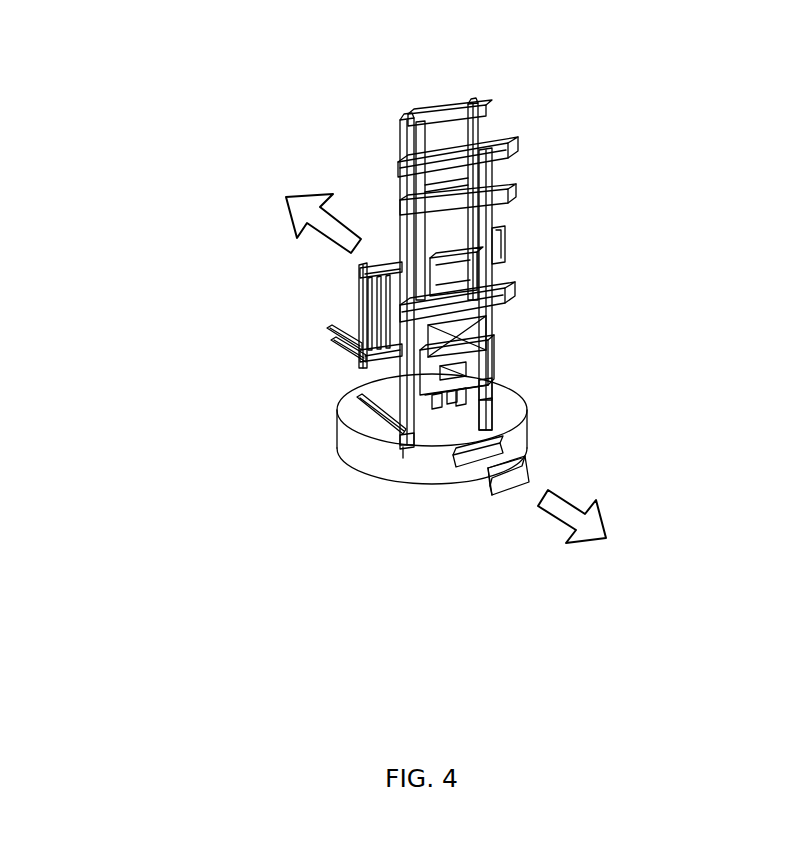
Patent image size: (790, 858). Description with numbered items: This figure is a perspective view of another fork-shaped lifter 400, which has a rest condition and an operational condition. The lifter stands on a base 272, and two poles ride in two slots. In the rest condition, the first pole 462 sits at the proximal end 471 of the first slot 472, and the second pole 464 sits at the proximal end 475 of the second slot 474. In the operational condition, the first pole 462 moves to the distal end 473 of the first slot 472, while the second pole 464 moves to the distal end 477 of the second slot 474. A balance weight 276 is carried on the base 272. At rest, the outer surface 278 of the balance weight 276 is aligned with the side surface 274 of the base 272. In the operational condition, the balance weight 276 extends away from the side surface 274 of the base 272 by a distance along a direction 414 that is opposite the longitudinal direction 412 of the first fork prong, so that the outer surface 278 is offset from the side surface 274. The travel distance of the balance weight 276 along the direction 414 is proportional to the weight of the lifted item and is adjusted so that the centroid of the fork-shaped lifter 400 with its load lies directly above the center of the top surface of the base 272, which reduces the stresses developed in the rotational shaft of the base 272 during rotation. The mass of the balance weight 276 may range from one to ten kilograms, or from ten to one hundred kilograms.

The fork-shaped lifter 400 is at (162, 105).
The longitudinal direction of the first fork prong 412 is at (305, 210).
The direction opposite the longitudinal direction 414 is at (594, 527).
The base 272 is at (516, 437).
The side surface of the base 274 is at (450, 478).
The balance weight 276 is at (540, 473).
The outer surface of the balance weight 278 is at (515, 488).
The first pole 462 is at (401, 441).
The second pole 464 is at (484, 397).
The proximal end of the first slot 471 is at (452, 399).
The first slot 472 is at (404, 394).
The distal end of the first slot 473 is at (347, 388).
The second slot 474 is at (461, 401).
The proximal end of the second slot 475 is at (496, 410).
The distal end of the second slot 477 is at (438, 401).